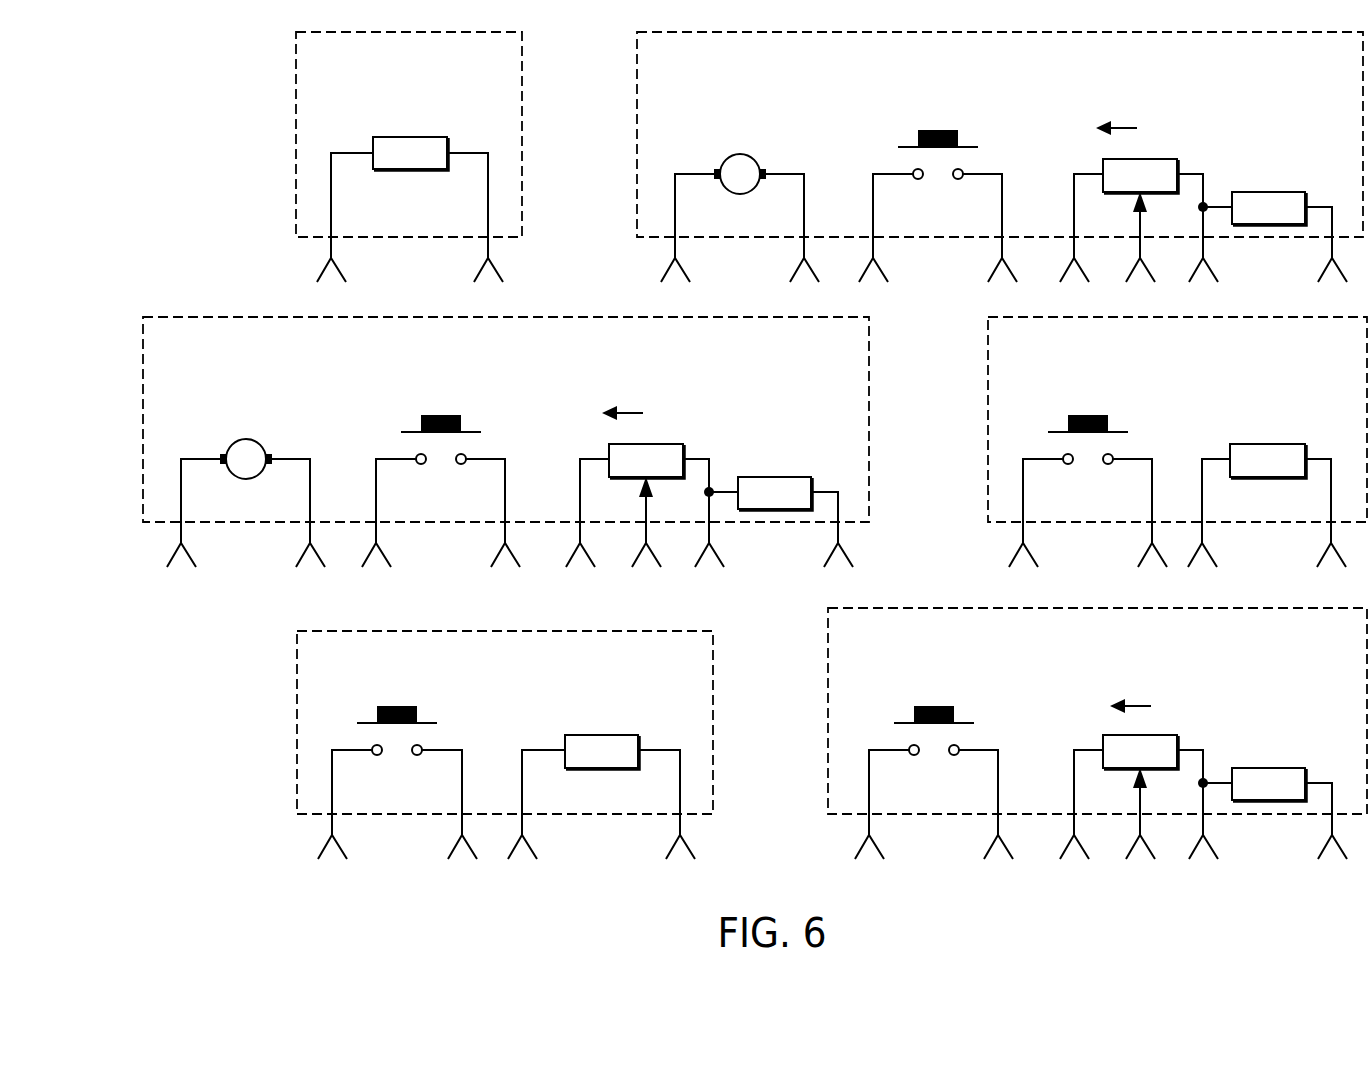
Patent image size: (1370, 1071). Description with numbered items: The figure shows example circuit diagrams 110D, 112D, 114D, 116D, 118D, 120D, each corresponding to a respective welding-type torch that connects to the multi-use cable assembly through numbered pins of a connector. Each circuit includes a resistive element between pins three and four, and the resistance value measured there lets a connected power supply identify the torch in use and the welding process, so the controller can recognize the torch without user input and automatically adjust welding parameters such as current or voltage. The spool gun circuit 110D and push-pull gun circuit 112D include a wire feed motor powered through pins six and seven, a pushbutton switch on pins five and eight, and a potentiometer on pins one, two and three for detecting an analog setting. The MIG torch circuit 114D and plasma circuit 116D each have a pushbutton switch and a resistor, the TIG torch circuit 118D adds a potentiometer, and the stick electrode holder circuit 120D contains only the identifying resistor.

The circuit diagram 110D is at (143, 418).
The circuit diagram 112D is at (637, 133).
The circuit diagram 114D is at (988, 418).
The circuit diagram 116D is at (297, 731).
The circuit diagram 118D is at (828, 710).
The circuit diagram 120D is at (296, 133).